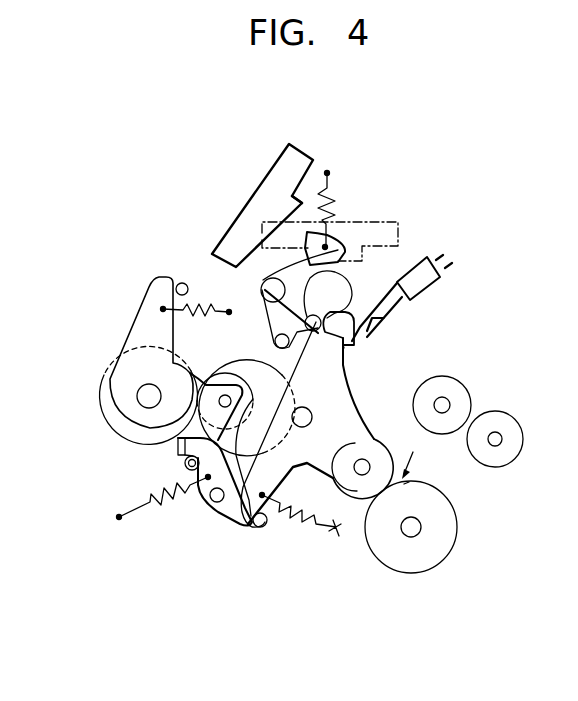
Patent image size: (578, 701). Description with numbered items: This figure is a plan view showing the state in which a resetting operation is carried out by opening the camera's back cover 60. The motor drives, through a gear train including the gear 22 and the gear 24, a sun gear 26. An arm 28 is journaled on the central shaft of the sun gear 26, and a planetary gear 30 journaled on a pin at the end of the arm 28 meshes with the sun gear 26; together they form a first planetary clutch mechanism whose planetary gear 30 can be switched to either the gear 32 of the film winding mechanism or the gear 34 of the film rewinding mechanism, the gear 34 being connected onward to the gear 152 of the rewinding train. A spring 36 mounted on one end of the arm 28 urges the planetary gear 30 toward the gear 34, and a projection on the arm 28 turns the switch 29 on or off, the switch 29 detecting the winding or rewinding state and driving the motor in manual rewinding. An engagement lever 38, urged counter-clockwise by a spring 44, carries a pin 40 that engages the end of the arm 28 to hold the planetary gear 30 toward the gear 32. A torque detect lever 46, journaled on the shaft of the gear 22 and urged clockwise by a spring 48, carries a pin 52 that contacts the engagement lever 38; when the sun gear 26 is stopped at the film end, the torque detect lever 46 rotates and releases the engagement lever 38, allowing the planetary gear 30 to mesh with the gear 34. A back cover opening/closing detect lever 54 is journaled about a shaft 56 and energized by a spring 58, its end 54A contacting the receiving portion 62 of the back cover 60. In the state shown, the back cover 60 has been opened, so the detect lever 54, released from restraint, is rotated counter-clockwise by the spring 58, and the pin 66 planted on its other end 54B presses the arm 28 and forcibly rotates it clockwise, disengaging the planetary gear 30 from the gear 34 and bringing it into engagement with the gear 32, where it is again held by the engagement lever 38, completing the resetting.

The gear 22 is at (108, 420).
The gear 24 is at (237, 371).
The sun gear 26 is at (312, 396).
The arm 28 is at (350, 381).
The switch 29 is at (425, 284).
The planetary gear 30 is at (357, 498).
The gear in film winding mechanism 32 is at (458, 527).
The gear in film rewinding mechanism 34 is at (470, 387).
The spring 36 is at (300, 525).
The engagement lever 38 is at (228, 512).
The pin 40 is at (257, 529).
The spring 44 is at (167, 500).
The torque detect lever 46 is at (134, 312).
The spring 48 is at (208, 303).
The pin 52 is at (176, 462).
The back cover opening/closing detect lever 54 is at (350, 287).
The end of back cover opening/closing detect lever 54A is at (345, 242).
The other end of back cover opening/closing detect lever 54B is at (384, 319).
The shaft 56 is at (262, 289).
The spring 58 is at (333, 193).
The back cover 60 is at (283, 185).
The receiving portion 62 is at (297, 202).
The pin 66 is at (344, 348).
The gear 152 is at (521, 422).